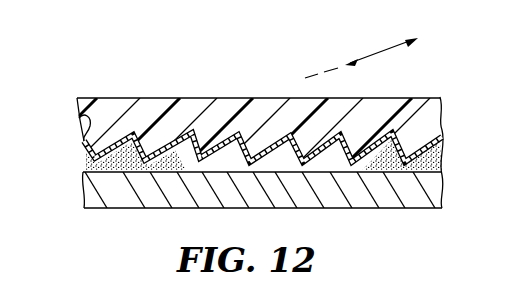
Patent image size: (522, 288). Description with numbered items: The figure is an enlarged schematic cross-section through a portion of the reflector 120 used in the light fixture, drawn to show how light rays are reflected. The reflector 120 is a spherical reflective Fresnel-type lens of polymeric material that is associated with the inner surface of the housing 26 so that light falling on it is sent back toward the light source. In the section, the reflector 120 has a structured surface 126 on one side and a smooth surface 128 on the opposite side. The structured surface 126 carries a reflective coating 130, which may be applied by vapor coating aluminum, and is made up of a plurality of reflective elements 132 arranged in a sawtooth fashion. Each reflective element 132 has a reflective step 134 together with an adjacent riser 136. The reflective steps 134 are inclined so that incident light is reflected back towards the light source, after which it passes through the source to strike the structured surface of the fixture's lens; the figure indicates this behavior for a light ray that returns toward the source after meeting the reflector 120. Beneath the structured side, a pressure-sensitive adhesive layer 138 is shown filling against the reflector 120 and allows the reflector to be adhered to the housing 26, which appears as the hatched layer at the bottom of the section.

The reflector 120 is at (265, 117).
The smooth surface 128 is at (127, 97).
The riser 136 is at (168, 120).
The reflective step 134 is at (345, 128).
The reflective element 132 is at (79, 122).
The reflective coating 130 is at (444, 138).
The pressure-sensitive adhesive layer 138 is at (443, 163).
The structured surface 126 is at (330, 165).
The housing 26 is at (387, 204).